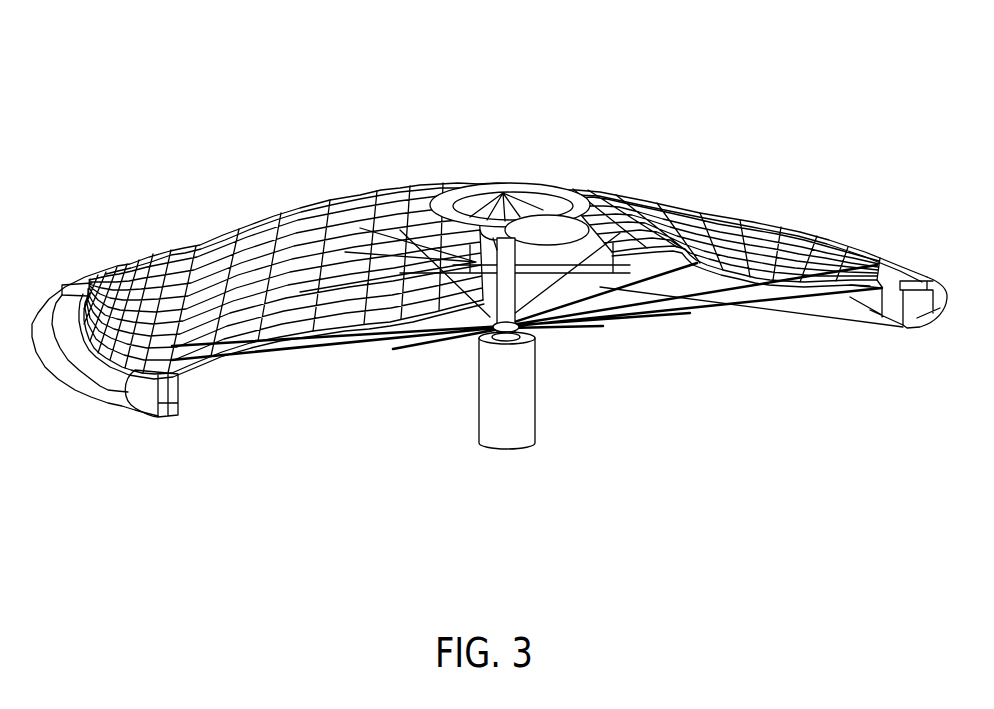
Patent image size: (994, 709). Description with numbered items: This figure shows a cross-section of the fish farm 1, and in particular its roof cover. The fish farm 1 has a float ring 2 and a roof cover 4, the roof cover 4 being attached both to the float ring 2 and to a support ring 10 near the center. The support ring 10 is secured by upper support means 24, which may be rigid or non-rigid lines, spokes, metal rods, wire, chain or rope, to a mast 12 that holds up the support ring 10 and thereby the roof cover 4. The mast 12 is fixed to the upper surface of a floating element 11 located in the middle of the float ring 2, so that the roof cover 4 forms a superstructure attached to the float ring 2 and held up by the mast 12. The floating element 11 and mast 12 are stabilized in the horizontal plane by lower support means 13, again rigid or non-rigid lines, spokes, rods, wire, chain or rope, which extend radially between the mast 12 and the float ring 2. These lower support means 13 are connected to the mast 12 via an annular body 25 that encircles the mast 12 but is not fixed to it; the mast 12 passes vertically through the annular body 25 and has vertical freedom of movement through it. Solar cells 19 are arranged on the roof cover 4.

The fish farm 1 is at (766, 194).
The float ring 2 is at (74, 372).
The roof cover 4 is at (240, 262).
The support ring 10 is at (572, 203).
The floating element 11 is at (503, 400).
The mast 12 is at (548, 328).
The lower support means 13 is at (693, 316).
The solar cells 19 is at (170, 255).
The upper support means 24 is at (527, 203).
The annular body 25 is at (507, 280).